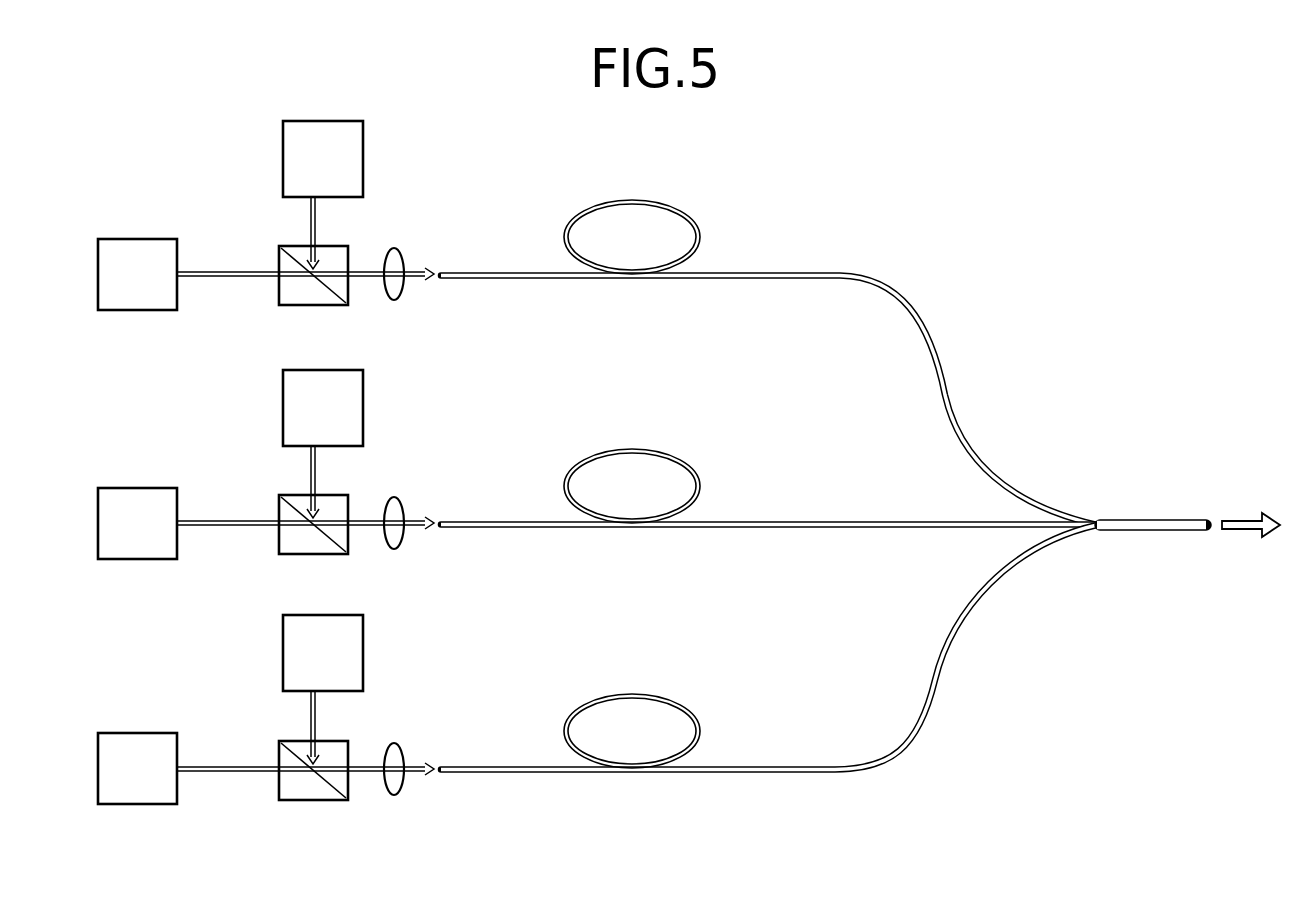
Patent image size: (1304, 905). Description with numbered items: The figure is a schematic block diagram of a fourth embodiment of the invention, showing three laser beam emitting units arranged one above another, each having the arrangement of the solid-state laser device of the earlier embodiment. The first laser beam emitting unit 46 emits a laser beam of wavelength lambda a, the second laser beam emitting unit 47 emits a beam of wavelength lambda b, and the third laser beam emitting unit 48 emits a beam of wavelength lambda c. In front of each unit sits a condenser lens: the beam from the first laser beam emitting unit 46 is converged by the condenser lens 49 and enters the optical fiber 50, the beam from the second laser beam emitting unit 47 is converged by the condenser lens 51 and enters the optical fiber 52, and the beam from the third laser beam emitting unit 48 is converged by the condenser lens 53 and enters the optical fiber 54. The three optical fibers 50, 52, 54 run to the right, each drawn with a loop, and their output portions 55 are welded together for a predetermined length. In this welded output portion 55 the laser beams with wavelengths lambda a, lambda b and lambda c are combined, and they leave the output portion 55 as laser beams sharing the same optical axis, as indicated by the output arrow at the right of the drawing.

The first laser beam emitting unit 46 is at (222, 203).
The second laser beam emitting unit 47 is at (230, 462).
The third laser beam emitting unit 48 is at (224, 698).
The condenser lens 49 is at (395, 250).
The optical fiber 50 is at (762, 272).
The condenser lens 51 is at (393, 497).
The optical fiber 52 is at (790, 520).
The condenser lens 53 is at (393, 744).
The optical fiber 54 is at (770, 766).
The output portion 55 is at (1140, 531).